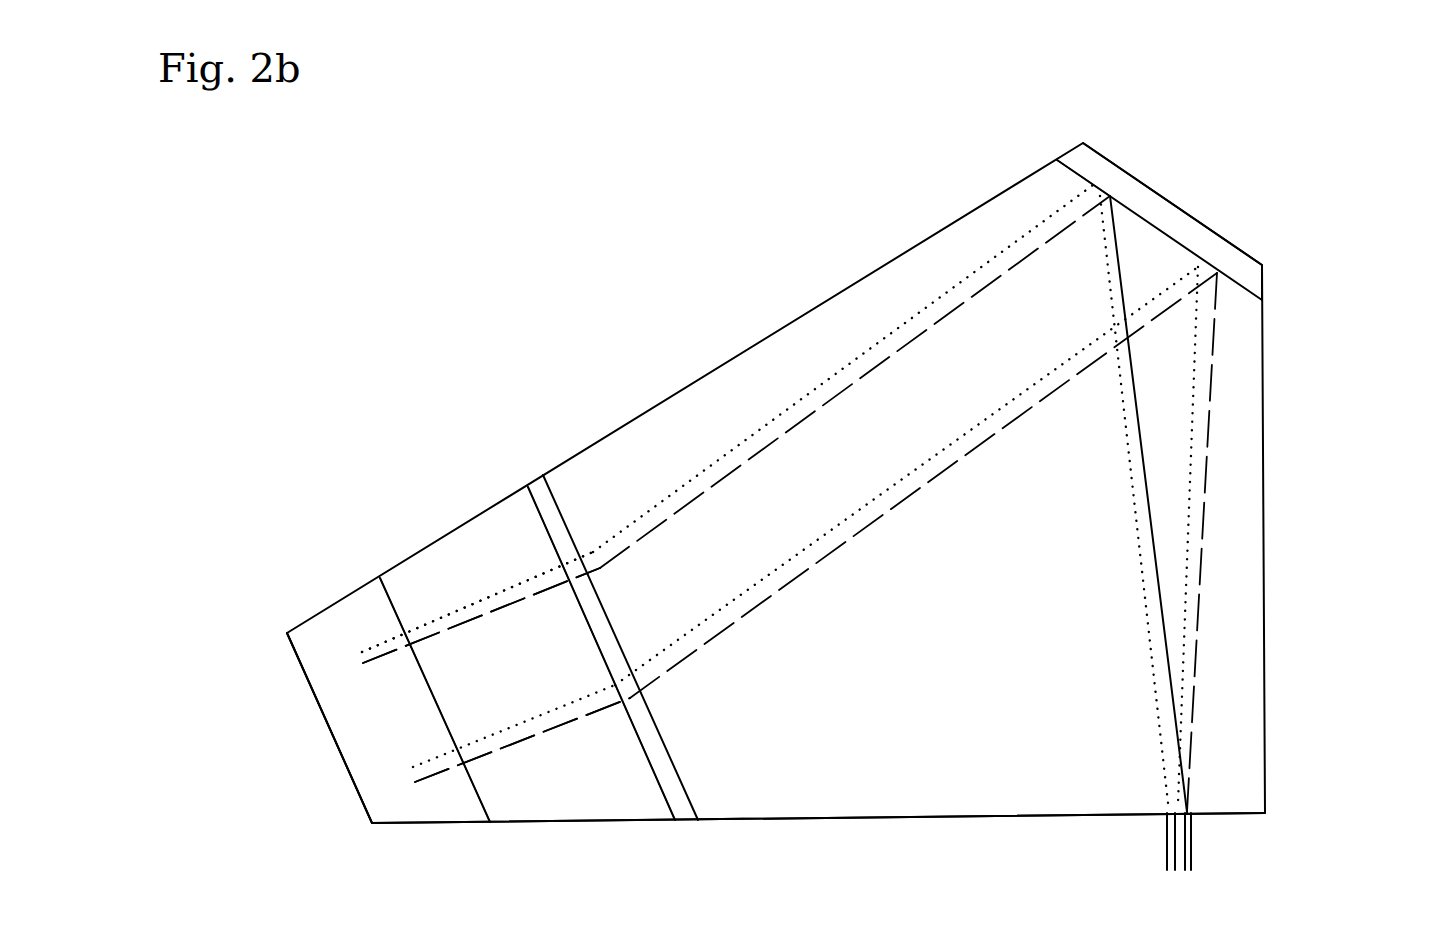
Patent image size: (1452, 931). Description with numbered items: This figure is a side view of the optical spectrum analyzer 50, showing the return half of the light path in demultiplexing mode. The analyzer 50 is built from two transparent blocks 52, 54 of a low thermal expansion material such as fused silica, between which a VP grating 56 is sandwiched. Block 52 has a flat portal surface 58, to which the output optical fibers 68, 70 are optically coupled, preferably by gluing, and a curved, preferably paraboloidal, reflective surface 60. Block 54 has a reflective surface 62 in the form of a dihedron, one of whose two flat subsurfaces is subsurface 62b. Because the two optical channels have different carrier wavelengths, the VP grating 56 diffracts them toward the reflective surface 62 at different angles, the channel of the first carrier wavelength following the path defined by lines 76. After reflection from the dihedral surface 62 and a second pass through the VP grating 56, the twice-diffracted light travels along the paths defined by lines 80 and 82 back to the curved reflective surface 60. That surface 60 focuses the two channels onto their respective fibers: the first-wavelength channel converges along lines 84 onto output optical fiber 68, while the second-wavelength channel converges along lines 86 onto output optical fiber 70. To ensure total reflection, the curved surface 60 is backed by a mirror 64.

The optical spectrum analyzer 50 is at (1280, 173).
The transparent block 52 is at (898, 665).
The transparent block 54 is at (622, 808).
The VP grating 56 is at (540, 500).
The flat portal surface 58 is at (943, 817).
The curved reflective surface 60 is at (1077, 175).
The reflective surface 62 is at (322, 612).
The flat subsurface 62b is at (344, 728).
The mirror 64 is at (1163, 197).
The output optical fiber 68 is at (1168, 870).
The output optical fiber 70 is at (1192, 867).
The lines 76 is at (514, 725).
The lines 80 is at (805, 398).
The lines 82 is at (790, 433).
The lines 84 is at (1190, 401).
The lines 86 is at (1156, 476).